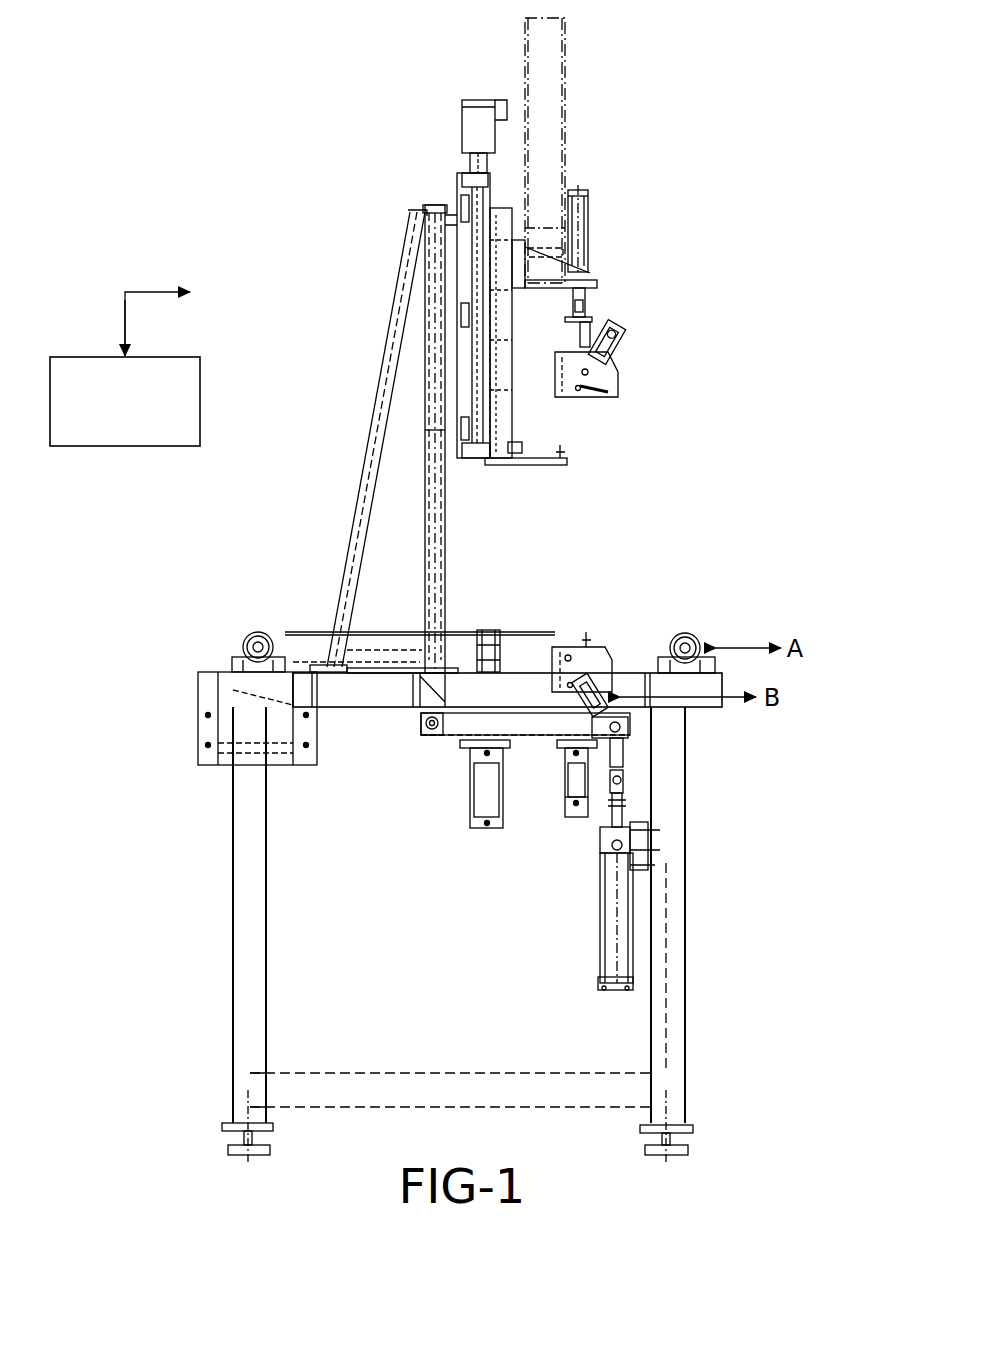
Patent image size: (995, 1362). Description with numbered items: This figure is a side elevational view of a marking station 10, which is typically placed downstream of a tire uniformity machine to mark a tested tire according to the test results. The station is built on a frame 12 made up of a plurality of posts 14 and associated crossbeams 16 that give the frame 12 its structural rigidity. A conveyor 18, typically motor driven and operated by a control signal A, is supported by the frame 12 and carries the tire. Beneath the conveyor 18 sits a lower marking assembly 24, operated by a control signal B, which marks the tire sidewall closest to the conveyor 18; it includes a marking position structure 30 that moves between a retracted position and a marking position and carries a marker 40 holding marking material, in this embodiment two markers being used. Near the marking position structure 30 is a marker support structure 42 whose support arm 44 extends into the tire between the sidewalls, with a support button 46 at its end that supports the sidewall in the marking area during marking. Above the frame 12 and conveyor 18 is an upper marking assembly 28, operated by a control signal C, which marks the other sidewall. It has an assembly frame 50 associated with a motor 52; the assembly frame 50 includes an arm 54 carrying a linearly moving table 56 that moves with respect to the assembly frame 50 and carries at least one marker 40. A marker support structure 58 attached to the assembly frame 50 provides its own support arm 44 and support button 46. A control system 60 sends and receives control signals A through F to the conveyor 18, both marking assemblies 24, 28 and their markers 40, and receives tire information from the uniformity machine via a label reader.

The marking station 10 is at (808, 215).
The frame 12 is at (710, 842).
The posts 14 is at (245, 997).
The crossbeams 16 is at (357, 693).
The conveyor 18 is at (300, 625).
The lower marking assembly 24 is at (545, 822).
The upper marking assembly 28 is at (645, 280).
The marking position structure 30 is at (632, 733).
The marker 40 is at (618, 633).
The marker support structure 42 is at (463, 650).
The support arm 44 is at (552, 465).
The support button 46 is at (562, 447).
The assembly frame 50 is at (366, 320).
The motor 52 is at (470, 120).
The arm 54 is at (458, 193).
The linearly moving table 56 is at (502, 312).
The marker support structure 58 is at (540, 478).
The control system 60 is at (163, 446).